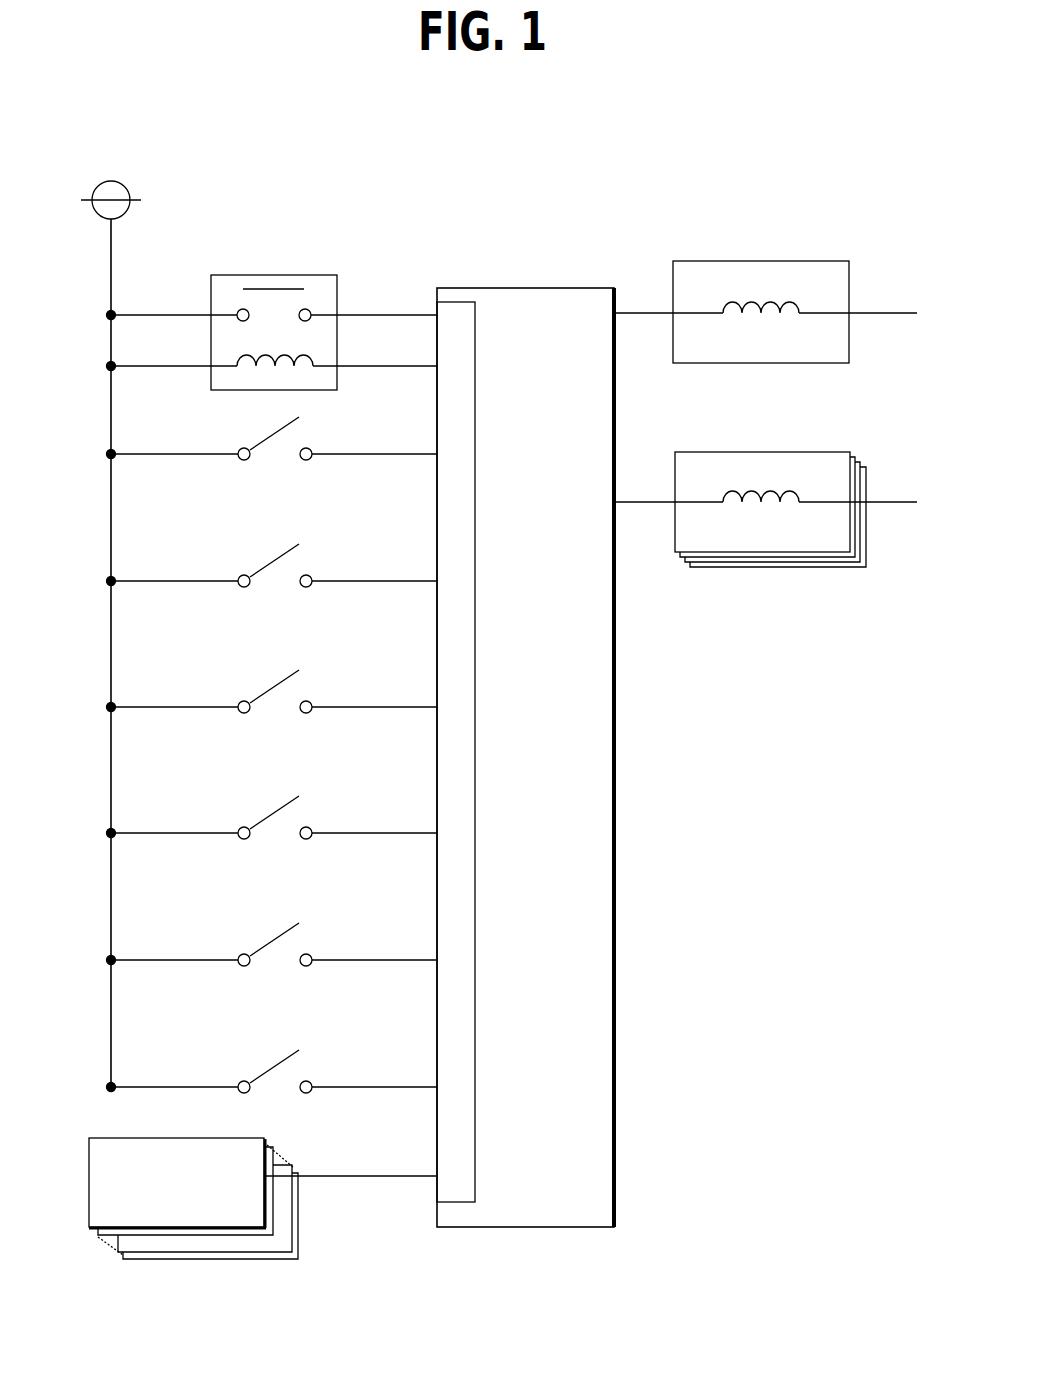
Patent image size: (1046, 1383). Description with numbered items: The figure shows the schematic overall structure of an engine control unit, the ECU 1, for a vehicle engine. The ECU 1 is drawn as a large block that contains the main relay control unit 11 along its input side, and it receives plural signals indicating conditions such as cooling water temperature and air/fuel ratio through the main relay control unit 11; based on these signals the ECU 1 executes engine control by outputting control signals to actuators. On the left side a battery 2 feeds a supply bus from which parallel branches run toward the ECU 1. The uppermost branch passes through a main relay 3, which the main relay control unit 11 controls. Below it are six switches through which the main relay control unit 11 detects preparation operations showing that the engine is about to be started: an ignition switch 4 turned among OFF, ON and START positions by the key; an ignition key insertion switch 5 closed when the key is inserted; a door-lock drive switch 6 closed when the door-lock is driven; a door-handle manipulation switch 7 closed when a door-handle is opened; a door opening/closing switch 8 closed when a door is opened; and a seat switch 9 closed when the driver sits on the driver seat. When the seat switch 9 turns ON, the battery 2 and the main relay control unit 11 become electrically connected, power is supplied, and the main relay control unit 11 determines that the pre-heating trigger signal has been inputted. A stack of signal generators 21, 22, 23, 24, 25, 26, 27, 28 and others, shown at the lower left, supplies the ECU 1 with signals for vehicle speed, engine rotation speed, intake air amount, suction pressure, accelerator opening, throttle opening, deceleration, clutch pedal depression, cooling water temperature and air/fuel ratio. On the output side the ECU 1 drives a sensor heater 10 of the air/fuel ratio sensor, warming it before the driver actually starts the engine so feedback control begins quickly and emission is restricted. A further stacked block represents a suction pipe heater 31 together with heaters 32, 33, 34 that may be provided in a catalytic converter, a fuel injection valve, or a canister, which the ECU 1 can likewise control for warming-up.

The engine control unit 1 is at (500, 713).
The battery 2 is at (125, 185).
The main relay 3 is at (263, 275).
The ignition switch 4 is at (265, 469).
The ignition key insertion switch 5 is at (265, 596).
The door-lock drive switch 6 is at (265, 722).
The door-handle manipulation switch 7 is at (265, 848).
The door opening/closing switch 8 is at (265, 975).
The seat switch 9 is at (265, 1102).
The sensor heater 10 is at (762, 261).
The main relay control unit 11 is at (448, 313).
The signal generator 21 is at (301, 1224).
The signal generator 22 is at (185, 1191).
The signal generator 23 is at (205, 1208).
The signal generator 24 is at (210, 1216).
The signal generator 25 is at (280, 1156).
The signal generator 26 is at (110, 1246).
The signal generator 27 is at (176, 1168).
The signal generator 28 is at (168, 1227).
The suction pipe heater 31 is at (766, 478).
The heater 32 is at (767, 507).
The heater 33 is at (772, 512).
The heater 34 is at (762, 452).